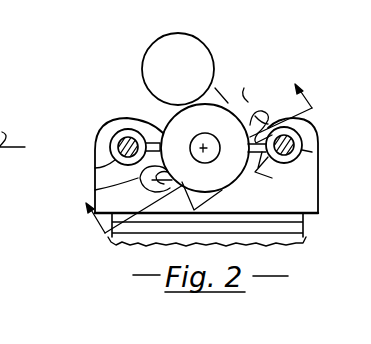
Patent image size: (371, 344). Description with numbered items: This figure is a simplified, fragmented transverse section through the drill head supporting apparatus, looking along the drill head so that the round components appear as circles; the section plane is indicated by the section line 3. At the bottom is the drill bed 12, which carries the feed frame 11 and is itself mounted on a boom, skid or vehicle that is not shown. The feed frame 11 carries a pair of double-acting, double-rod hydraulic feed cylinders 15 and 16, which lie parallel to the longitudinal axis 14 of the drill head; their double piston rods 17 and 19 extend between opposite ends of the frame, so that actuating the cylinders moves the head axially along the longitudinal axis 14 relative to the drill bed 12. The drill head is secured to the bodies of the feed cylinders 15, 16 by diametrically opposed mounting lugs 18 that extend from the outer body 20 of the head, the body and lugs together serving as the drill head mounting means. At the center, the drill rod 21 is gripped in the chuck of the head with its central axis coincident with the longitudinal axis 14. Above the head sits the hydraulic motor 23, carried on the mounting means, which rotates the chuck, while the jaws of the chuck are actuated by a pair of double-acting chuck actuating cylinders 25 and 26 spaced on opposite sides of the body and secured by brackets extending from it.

The section line 3- 3 is at (309, 111).
The feed frame 11 is at (108, 119).
The drill bed 12 is at (308, 228).
The longitudinal axis 14 is at (208, 137).
The hydraulic feed cylinder 15 is at (95, 168).
The hydraulic feed cylinder 16 is at (312, 152).
The double piston rod 17 is at (118, 147).
The mounting lug 18 is at (162, 128).
The double piston rod 19 is at (298, 136).
The outer body 20 is at (230, 103).
The drill rod 21 is at (212, 160).
The hydraulic motor 23 is at (142, 73).
The chuck actuating cylinder 25 is at (95, 190).
The chuck actuating cylinder 26 is at (255, 114).